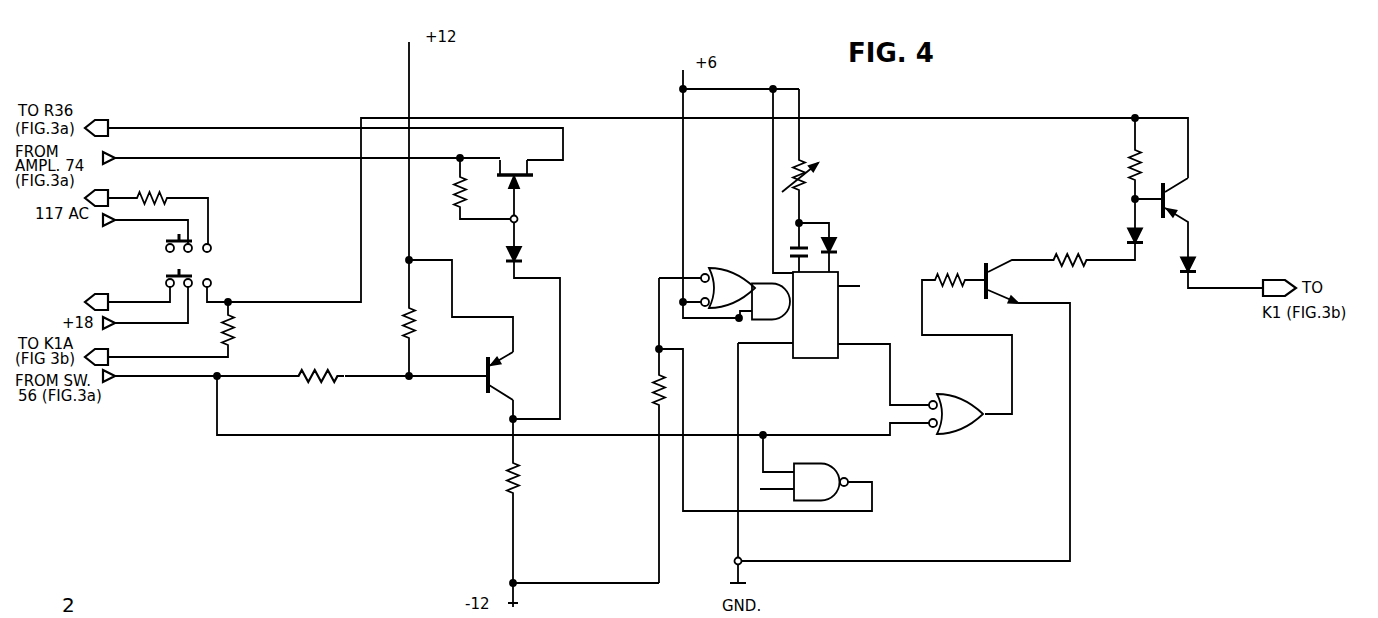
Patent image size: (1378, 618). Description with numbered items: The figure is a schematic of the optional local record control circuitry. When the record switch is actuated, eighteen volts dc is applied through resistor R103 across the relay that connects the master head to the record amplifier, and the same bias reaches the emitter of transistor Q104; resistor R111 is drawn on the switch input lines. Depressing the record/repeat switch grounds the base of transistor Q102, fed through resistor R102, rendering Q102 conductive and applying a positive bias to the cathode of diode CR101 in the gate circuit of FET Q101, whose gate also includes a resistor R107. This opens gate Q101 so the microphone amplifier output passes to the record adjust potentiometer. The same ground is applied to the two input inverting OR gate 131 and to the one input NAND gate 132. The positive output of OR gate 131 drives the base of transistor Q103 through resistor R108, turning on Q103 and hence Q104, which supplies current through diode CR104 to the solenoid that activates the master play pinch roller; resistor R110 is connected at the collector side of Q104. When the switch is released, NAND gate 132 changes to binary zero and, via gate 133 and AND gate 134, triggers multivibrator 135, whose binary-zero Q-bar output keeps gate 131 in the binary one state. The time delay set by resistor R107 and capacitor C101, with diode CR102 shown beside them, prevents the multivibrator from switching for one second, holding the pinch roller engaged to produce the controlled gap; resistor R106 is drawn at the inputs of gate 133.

The resistor R111 is at (171, 192).
The resistor R103 is at (243, 310).
The resistor R102 is at (310, 370).
The resistor R107 is at (454, 202).
The FET gate Q101 is at (555, 206).
The diode CR101 is at (527, 256).
The transistor Q102 is at (530, 384).
The resistor R106 is at (640, 368).
The gate 133 is at (728, 288).
The AND gate 134 is at (771, 302).
The multivibrator 135 is at (815, 325).
The capacitor C101 is at (785, 244).
The diode CR102 is at (840, 260).
The two input inverting OR gate 131 is at (956, 414).
The one input NAND gate 132 is at (821, 482).
The resistor R108 is at (947, 277).
The transistor Q103 is at (986, 257).
The resistor R110 is at (1127, 171).
The transistor Q104 is at (1207, 190).
The diode CR104 is at (1206, 272).